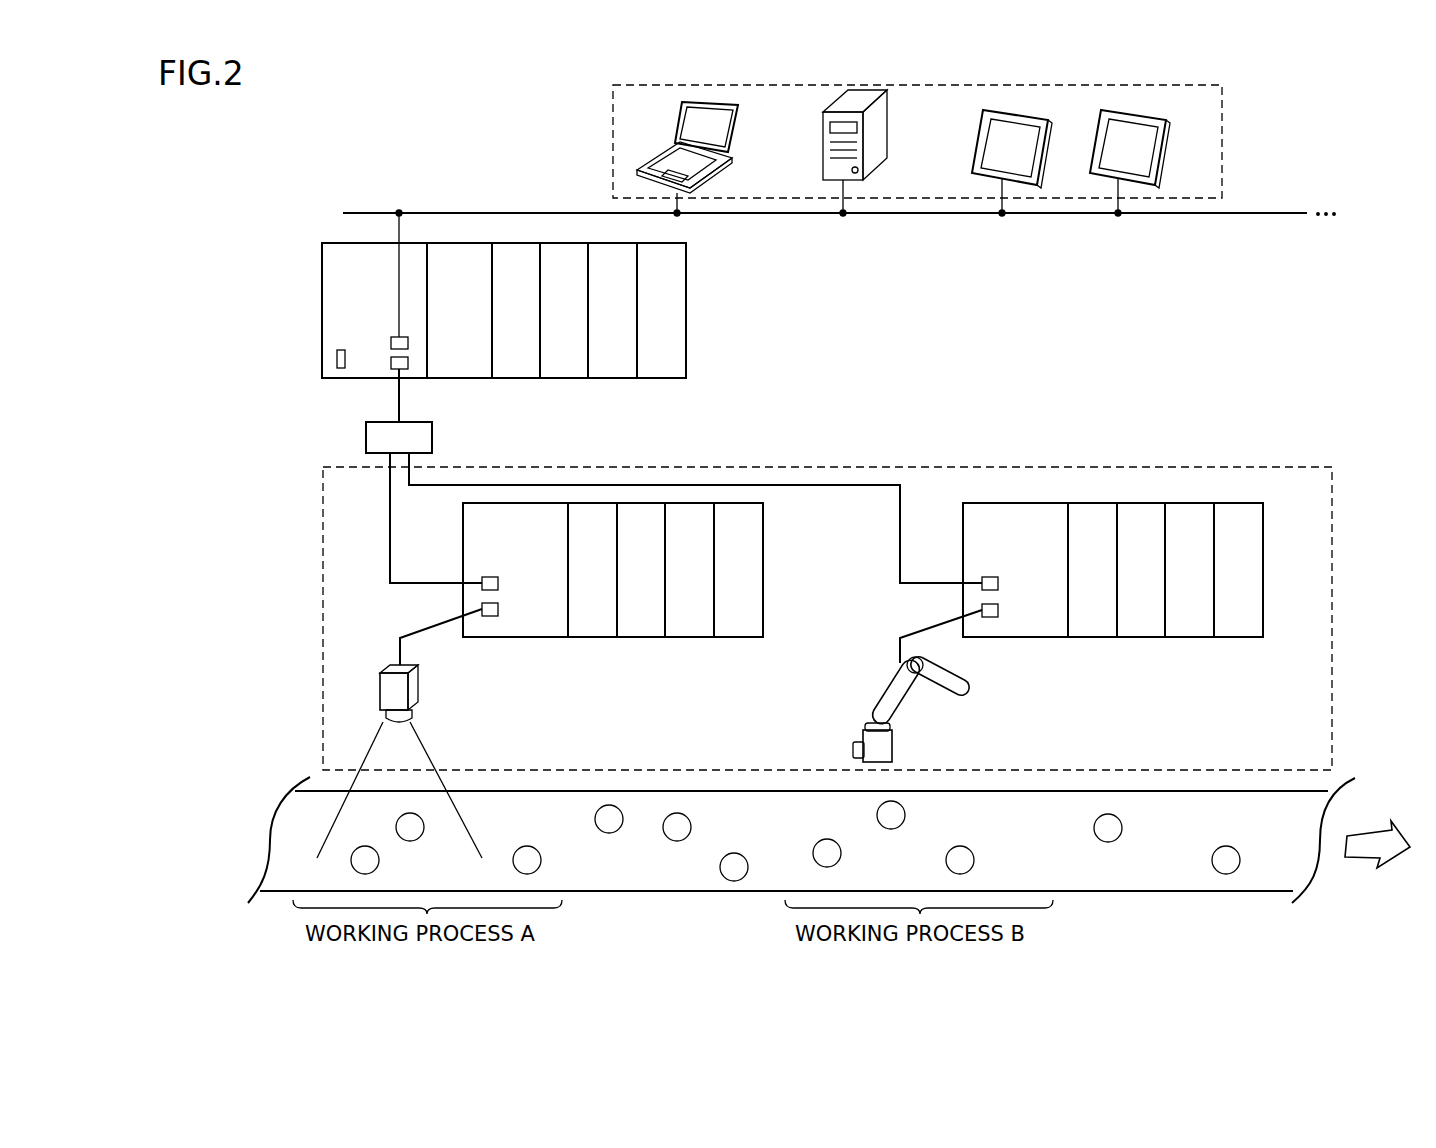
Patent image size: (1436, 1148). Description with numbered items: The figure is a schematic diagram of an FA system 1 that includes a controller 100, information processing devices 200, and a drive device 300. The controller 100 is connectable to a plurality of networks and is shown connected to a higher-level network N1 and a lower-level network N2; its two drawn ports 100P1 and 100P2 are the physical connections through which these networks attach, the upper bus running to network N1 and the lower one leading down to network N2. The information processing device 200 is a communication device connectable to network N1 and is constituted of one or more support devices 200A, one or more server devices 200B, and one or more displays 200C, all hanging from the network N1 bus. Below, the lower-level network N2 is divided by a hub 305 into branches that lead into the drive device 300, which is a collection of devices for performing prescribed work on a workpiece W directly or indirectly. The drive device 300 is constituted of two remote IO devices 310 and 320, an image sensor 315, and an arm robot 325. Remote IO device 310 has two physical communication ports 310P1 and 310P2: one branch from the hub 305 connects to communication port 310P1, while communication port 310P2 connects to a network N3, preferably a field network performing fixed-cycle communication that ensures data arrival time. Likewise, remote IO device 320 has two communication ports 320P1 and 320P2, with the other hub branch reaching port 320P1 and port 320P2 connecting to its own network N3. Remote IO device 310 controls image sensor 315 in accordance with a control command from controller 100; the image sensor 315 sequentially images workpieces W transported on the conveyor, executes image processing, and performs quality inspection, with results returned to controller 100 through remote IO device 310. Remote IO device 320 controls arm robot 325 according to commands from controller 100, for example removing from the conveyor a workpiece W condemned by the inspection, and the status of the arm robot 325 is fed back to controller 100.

The FA system 1 is at (1402, 102).
The controller 100 is at (708, 280).
The first communication port of control device 100P1 is at (390, 343).
The second communication port of control device 100P2 is at (390, 362).
The information processing device 200 is at (1222, 145).
The support device 200A is at (738, 128).
The server device 200B is at (887, 128).
The display 200C is at (1025, 114).
The drive device 300 is at (1267, 467).
The hub 305 is at (432, 437).
The remote IO device 310 is at (763, 520).
The communication port 310P1 is at (488, 577).
The communication port 310P2 is at (490, 616).
The image sensor 315 is at (418, 695).
The remote IO device 320 is at (1263, 520).
The communication port 320P1 is at (988, 577).
The communication port 320P2 is at (990, 617).
The arm robot 325 is at (892, 740).
The higher-level network N1 is at (1262, 213).
The lower-level network N2 is at (396, 404).
The network N3 is at (408, 636).
The workpiece W is at (612, 833).